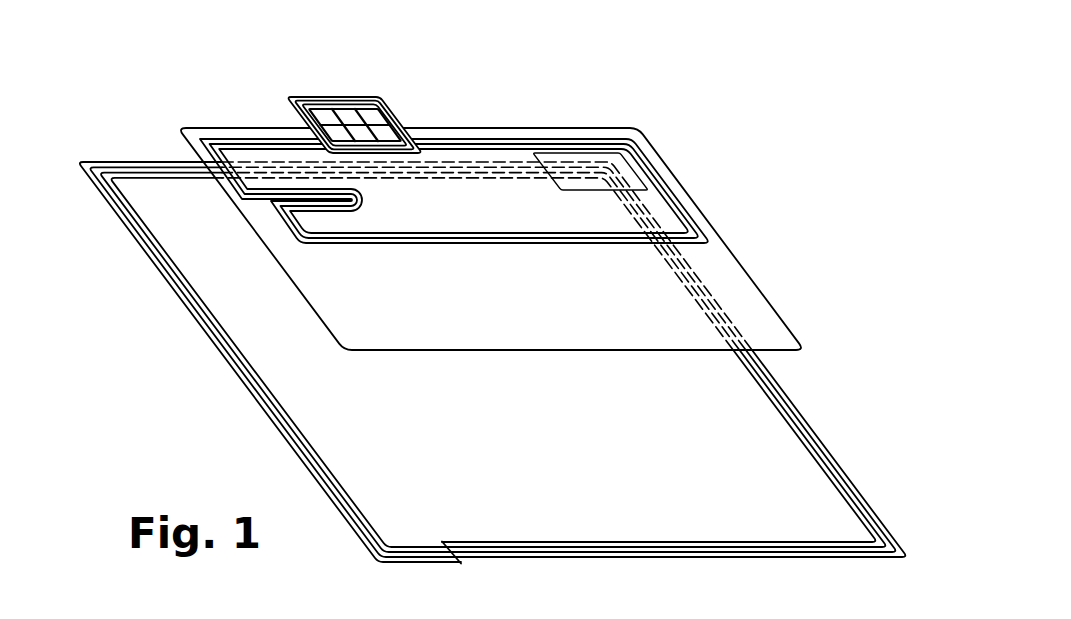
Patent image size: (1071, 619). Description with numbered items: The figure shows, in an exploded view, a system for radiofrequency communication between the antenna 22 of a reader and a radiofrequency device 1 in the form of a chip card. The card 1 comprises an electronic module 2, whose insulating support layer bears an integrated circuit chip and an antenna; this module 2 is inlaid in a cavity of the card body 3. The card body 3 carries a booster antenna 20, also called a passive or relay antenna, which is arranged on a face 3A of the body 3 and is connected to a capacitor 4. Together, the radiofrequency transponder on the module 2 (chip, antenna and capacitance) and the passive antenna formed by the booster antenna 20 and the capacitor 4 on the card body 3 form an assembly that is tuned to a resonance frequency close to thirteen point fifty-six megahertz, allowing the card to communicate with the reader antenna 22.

The radiofrequency device 1 is at (771, 93).
The electronic module 2 is at (390, 108).
The card body 3 is at (751, 277).
The face of the body 3A is at (767, 323).
The capacitor 4 is at (578, 157).
The booster antenna 20 is at (673, 192).
The antenna of a reader 22 is at (809, 431).